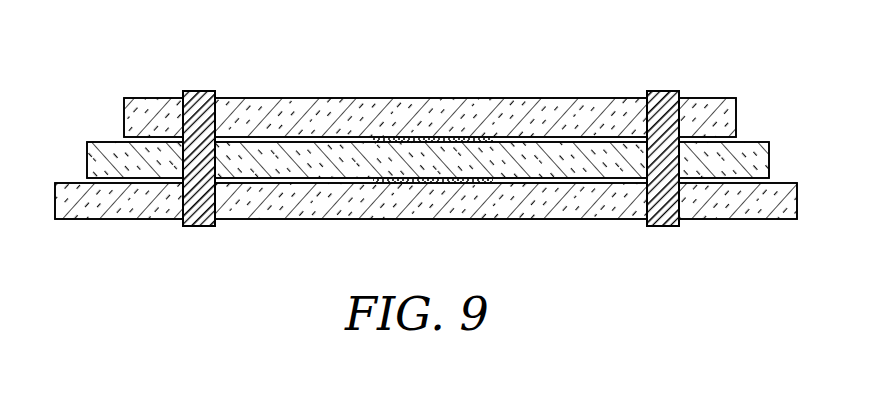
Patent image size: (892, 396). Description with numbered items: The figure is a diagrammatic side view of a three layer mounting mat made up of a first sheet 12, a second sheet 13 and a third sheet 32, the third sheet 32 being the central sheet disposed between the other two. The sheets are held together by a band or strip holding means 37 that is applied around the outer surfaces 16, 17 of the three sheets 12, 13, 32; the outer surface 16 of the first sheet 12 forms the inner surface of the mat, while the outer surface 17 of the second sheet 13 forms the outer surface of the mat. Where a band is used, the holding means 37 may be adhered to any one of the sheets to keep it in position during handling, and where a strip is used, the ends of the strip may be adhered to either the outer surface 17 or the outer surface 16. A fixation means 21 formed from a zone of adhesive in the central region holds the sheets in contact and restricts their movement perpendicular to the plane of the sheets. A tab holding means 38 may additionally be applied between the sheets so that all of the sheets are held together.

The first sheet 12 is at (290, 106).
The second sheet 13 is at (590, 208).
The outer surface of the first sheet 16 is at (143, 97).
The outer surface of the second sheet 17 is at (143, 220).
The fixation means 21 is at (424, 139).
The third sheet 32 is at (295, 163).
The holding means 37 is at (198, 91).
The holding means 38 is at (91, 161).